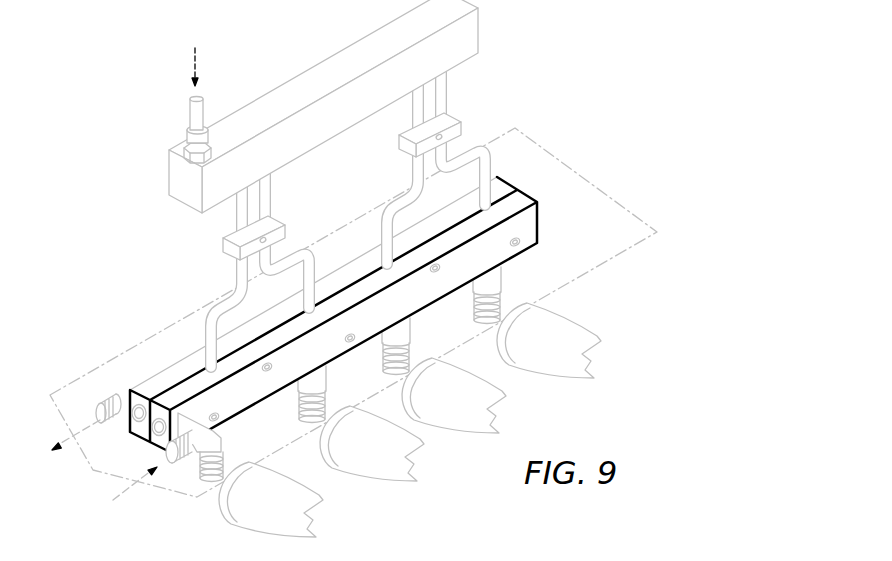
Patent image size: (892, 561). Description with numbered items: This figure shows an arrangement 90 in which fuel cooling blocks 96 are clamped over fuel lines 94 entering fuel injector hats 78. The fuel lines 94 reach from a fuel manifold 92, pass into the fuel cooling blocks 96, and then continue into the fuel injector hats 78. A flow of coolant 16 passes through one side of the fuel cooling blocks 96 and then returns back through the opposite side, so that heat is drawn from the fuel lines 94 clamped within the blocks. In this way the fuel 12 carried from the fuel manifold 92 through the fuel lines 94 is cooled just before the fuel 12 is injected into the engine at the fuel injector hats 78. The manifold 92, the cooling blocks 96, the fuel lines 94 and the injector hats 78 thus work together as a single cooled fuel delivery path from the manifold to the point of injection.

The fuel 12 is at (189, 71).
The coolant 16 is at (70, 440).
The fuel injector hats 78 is at (497, 273).
The nozzle assembly 90 is at (332, 268).
The fuel manifold 92 is at (367, 112).
The fuel lines 94 is at (236, 278).
The fuel cooling blocks 96 is at (394, 320).